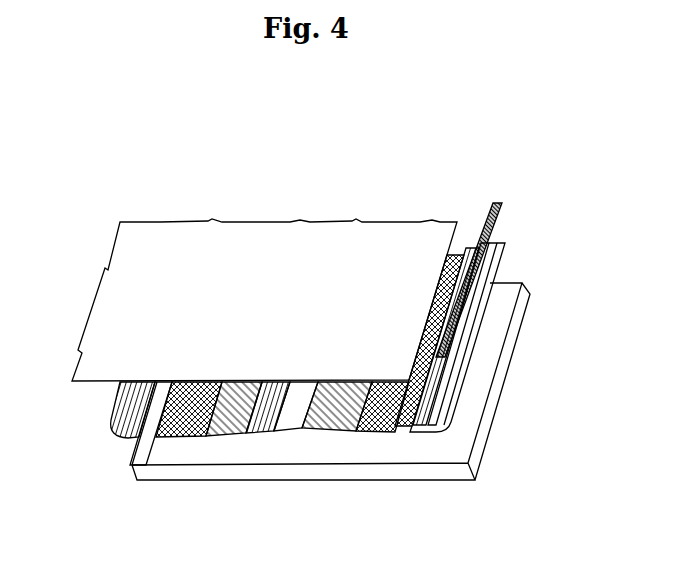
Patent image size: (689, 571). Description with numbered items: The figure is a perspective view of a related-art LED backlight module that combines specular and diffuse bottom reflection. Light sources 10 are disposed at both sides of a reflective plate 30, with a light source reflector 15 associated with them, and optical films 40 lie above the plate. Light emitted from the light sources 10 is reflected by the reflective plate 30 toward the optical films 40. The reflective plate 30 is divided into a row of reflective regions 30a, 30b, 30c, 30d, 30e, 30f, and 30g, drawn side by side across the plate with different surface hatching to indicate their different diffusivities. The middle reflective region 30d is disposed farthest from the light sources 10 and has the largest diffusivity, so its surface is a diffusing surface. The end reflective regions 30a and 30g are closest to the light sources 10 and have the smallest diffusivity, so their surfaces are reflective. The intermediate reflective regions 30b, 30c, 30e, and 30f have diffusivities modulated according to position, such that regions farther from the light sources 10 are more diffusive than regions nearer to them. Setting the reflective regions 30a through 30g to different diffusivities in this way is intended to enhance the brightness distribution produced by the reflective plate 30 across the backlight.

The light sources 10 is at (158, 222).
The light source reflector 15 is at (118, 400).
The reflective plate 30 is at (467, 247).
The reflective region 30a is at (157, 437).
The reflective region 30b is at (195, 437).
The reflective region 30c is at (232, 435).
The middle reflective region 30d is at (270, 431).
The reflective region 30e is at (302, 429).
The reflective region 30f is at (345, 432).
The reflective region 30g is at (390, 433).
The optical films 40 is at (427, 228).